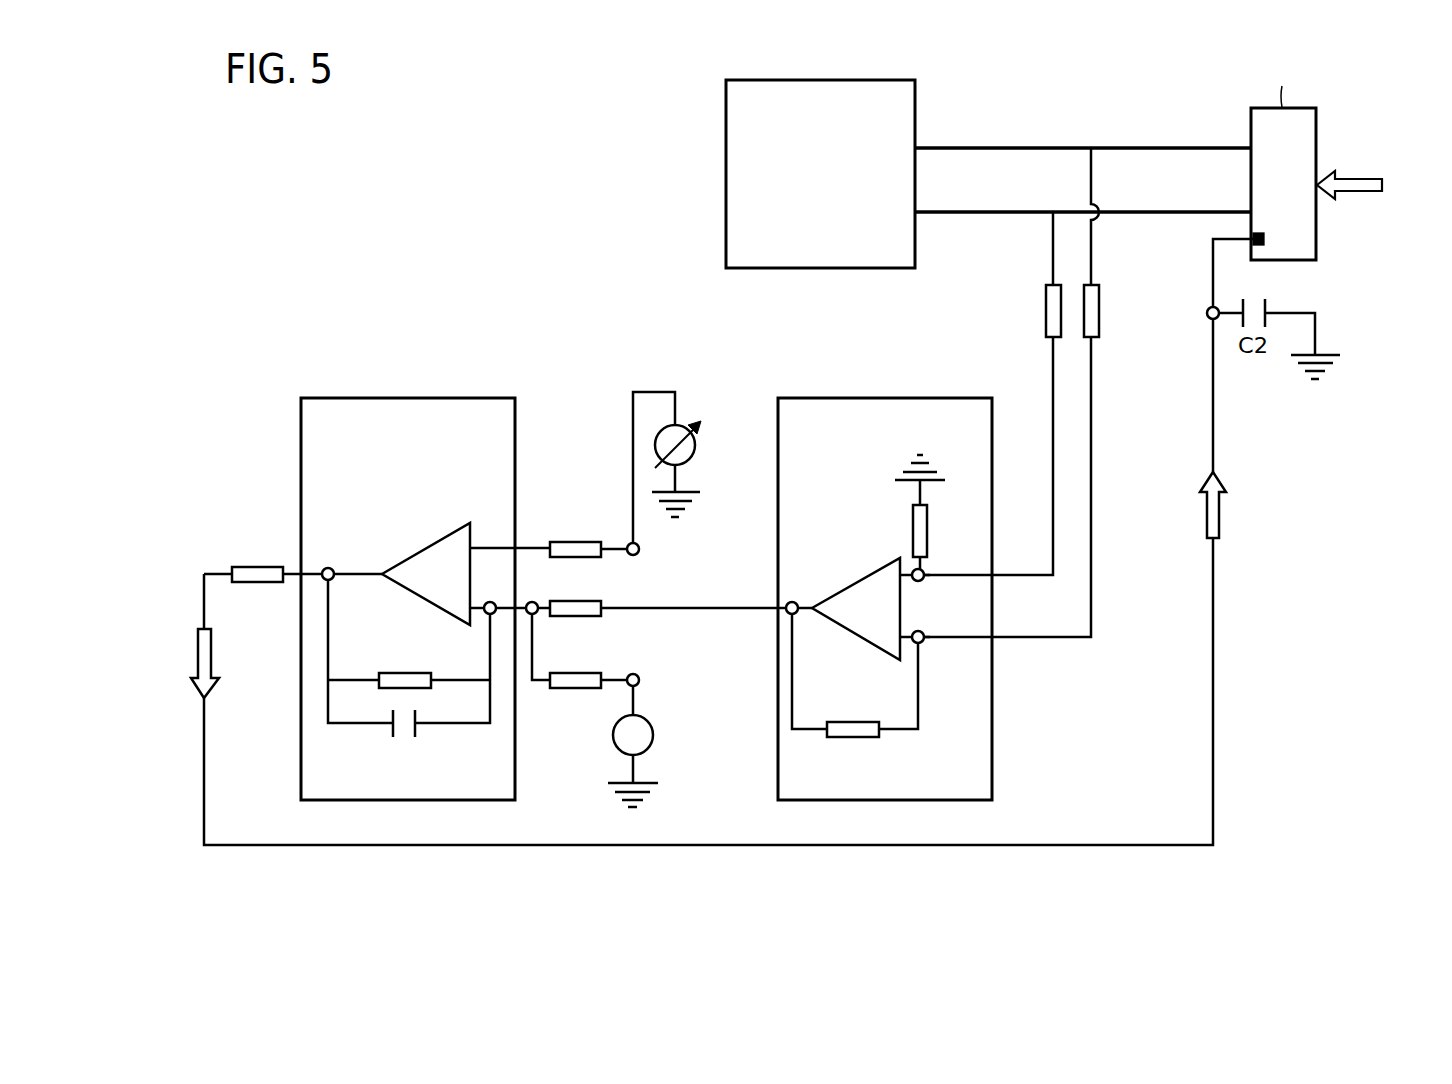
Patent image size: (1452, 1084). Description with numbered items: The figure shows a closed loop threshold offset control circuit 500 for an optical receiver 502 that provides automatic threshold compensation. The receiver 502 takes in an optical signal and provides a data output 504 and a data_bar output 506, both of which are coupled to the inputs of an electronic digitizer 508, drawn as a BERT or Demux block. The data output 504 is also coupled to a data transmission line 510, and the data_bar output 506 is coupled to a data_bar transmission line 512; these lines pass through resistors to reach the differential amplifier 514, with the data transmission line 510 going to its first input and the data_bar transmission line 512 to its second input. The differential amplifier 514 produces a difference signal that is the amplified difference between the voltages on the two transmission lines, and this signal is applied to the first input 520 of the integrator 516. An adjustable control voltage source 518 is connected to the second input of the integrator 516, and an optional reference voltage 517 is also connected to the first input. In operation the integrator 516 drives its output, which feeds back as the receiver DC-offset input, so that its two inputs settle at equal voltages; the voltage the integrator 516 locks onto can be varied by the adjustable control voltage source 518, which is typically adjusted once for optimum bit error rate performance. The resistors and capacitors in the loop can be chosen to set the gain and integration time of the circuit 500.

The closed loop threshold offset control circuit 500 is at (1078, 75).
The optical receiver 502 is at (1302, 199).
The data output 504 is at (1184, 146).
The data_bar output 506 is at (1184, 210).
The electronic digitizer 508 is at (838, 131).
The data transmission line 510 is at (1093, 369).
The data_bar transmission line 512 is at (1052, 369).
The differential amplifier 514 is at (900, 444).
The integrator 516 is at (427, 444).
The optional reference voltage 517 is at (654, 738).
The adjustable control voltage source 518 is at (697, 446).
The first input of the integrator 520 is at (733, 610).